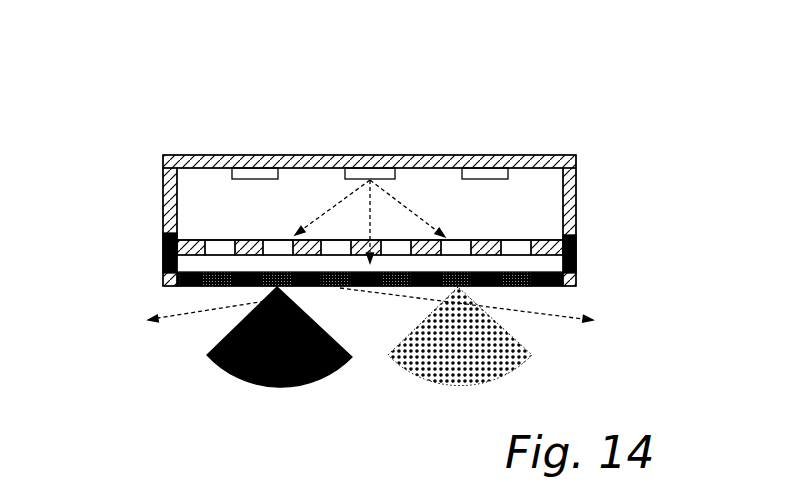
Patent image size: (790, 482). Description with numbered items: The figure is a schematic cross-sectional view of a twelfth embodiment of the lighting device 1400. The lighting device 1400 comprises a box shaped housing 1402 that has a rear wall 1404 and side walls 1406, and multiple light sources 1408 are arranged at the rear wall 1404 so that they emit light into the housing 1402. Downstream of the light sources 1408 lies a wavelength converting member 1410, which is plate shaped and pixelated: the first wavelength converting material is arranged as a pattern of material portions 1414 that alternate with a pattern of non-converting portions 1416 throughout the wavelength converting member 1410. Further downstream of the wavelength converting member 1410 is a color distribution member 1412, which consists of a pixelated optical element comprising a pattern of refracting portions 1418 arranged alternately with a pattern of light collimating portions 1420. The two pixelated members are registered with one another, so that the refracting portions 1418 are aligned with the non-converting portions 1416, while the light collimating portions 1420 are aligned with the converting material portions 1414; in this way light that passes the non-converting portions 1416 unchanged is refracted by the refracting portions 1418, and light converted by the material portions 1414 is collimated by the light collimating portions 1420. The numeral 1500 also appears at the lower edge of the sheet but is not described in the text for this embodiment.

The lighting device 1400 is at (220, 100).
The box shaped housing 1402 is at (360, 150).
The rear wall 1404 is at (312, 160).
The side walls 1406 is at (165, 220).
The light sources 1408 is at (243, 172).
The wavelength converting member 1410 is at (230, 235).
The color distribution member 1412 is at (181, 287).
The material portions 1414 is at (252, 240).
The non-converting portions 1416 is at (277, 240).
The refracting portions 1418 is at (163, 267).
The light collimating portions 1420 is at (290, 288).
The device (next figure) 1500 is at (437, 473).